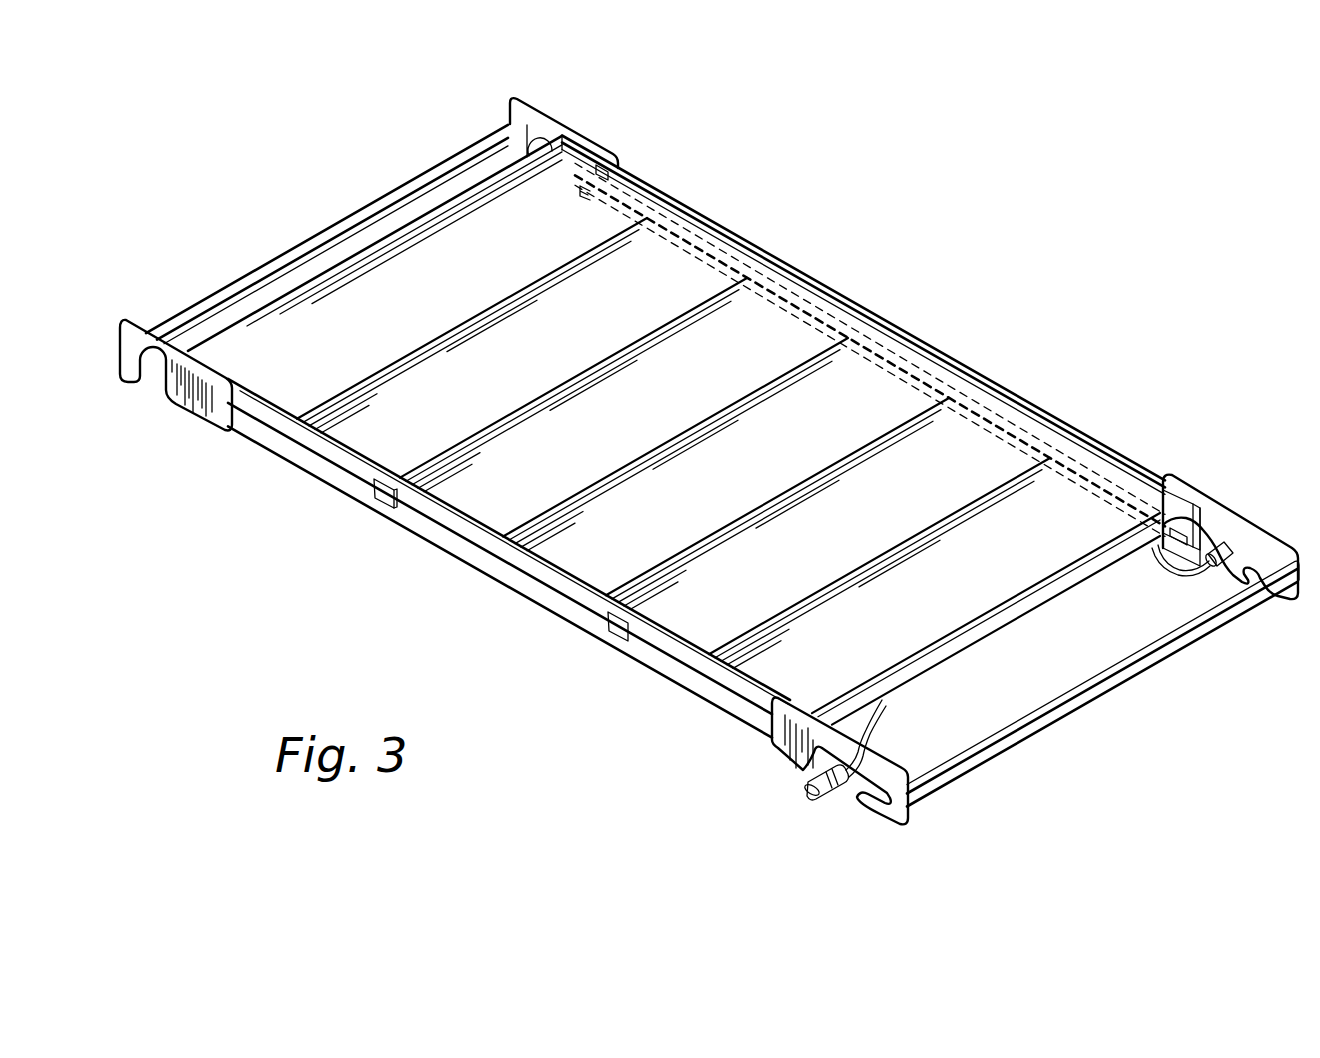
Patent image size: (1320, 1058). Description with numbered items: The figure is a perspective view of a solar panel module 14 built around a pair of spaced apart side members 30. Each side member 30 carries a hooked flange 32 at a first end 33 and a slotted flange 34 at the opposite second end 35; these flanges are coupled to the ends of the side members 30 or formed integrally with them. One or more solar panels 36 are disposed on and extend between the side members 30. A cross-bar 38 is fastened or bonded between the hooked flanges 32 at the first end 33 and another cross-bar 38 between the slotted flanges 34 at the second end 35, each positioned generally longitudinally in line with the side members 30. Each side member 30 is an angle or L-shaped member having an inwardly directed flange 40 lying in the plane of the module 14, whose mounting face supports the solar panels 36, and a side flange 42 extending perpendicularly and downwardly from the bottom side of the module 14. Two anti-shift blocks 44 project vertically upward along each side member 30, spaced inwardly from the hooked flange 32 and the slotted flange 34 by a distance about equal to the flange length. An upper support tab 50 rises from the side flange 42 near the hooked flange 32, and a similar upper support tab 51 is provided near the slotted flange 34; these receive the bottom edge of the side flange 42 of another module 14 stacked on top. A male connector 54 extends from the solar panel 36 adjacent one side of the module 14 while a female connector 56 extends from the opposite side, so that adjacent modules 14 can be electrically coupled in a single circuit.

The solar panel module 14 is at (803, 150).
The side member 30 is at (445, 552).
The hooked flange 32 is at (1260, 526).
The first end 33 is at (1143, 735).
The slotted flange 34 is at (122, 318).
The second end 35 is at (400, 125).
The solar panel 36 is at (846, 397).
The cross-bar 38 is at (338, 226).
The inwardly directed flange 40 is at (278, 432).
The side flange 42 is at (540, 598).
The anti-shift block 44 is at (384, 500).
The upper support tab 50 is at (1180, 480).
The upper support tab 51 is at (617, 157).
The male connector 54 is at (813, 790).
The female connector 56 is at (1222, 560).